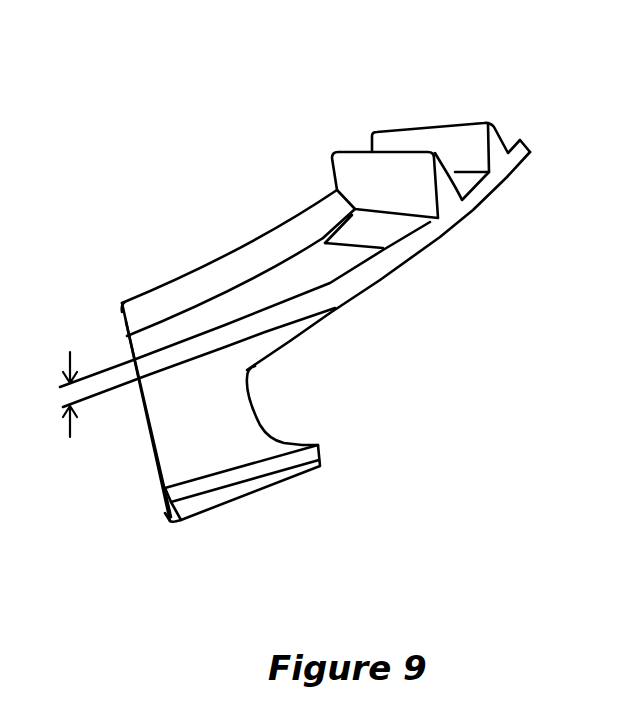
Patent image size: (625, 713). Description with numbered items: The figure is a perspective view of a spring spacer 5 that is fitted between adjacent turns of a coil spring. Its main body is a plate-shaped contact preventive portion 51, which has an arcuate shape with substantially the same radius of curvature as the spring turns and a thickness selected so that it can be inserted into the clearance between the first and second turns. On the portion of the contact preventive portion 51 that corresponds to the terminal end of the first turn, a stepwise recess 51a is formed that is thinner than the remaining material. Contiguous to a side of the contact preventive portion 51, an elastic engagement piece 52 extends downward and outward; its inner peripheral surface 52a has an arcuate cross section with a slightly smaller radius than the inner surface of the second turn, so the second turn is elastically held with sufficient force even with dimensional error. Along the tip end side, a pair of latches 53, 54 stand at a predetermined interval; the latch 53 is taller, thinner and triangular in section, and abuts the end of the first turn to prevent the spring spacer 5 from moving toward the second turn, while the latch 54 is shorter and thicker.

The spring spacer 5 is at (241, 34).
The contact preventive portion 51 is at (255, 292).
The stepwise recess 51a is at (393, 230).
The elastic engagement piece 52 is at (168, 518).
The inner peripheral surface 52a is at (167, 402).
The latch 53 is at (340, 160).
The latch 54 is at (450, 137).